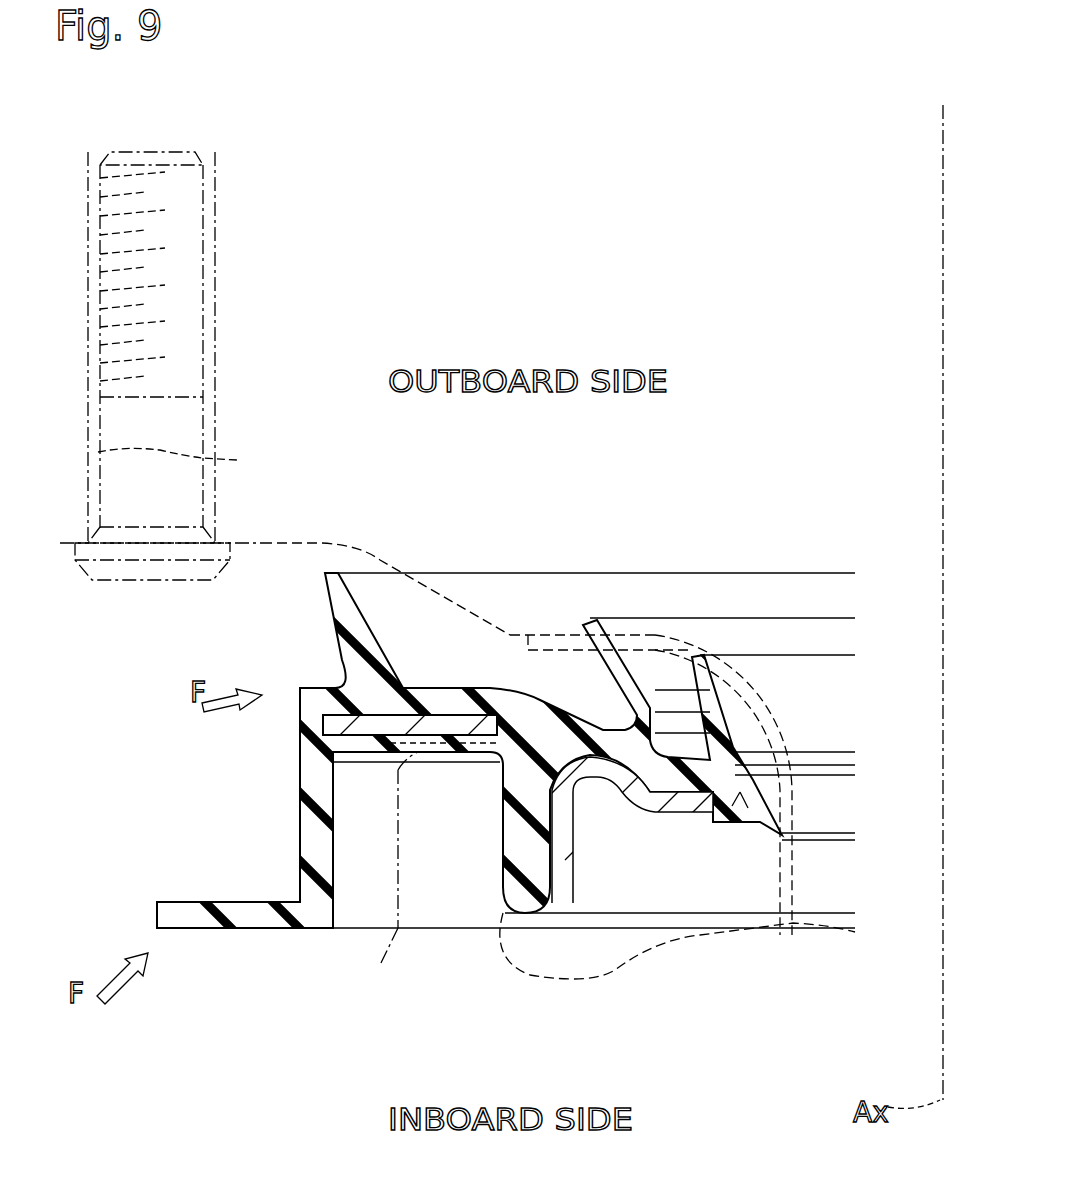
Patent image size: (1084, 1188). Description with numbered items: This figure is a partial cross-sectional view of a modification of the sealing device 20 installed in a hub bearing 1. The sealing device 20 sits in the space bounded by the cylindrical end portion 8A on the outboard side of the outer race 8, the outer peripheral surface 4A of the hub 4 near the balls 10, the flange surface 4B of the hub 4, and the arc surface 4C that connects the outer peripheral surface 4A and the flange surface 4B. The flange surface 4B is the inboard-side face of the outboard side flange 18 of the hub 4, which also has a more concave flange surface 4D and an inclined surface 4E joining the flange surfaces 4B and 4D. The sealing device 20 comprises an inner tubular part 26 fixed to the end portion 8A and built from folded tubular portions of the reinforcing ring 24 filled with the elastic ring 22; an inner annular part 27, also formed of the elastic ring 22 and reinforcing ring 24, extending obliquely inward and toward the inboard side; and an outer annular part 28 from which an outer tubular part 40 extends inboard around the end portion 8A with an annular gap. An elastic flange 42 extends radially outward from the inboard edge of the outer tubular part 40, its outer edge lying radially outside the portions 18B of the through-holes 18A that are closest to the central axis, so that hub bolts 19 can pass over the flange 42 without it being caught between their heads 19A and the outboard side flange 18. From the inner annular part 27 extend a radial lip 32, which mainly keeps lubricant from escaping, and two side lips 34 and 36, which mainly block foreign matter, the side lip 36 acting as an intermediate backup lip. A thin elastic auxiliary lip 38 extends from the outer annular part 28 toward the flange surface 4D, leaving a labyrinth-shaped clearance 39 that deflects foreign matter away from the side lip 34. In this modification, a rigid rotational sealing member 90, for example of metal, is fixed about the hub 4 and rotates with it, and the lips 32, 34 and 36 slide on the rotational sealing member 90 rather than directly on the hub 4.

The hub bearing 1 is at (276, 765).
The hub 4 is at (795, 932).
The outer peripheral surface 4A is at (790, 883).
The flange surface 4B is at (558, 633).
The arc surface 4C is at (765, 718).
The flange surface 4D is at (304, 543).
The inclined surface 4E is at (420, 618).
The outer race 8 is at (398, 856).
The cylindrical end portion 8A is at (398, 816).
The balls 10 is at (817, 930).
The outboard side flange 18 is at (262, 547).
The through-hole 18A is at (237, 460).
The portion closest to the central axis 18B is at (203, 350).
The hub bolt 19 is at (210, 385).
The head 19A is at (118, 583).
The sealing device 20 is at (585, 558).
The elastic ring 22 is at (305, 740).
The reinforcing ring 24 is at (560, 875).
The inner tubular part 26 is at (527, 915).
The inner annular part 27 is at (588, 770).
The outer annular part 28 is at (445, 688).
The radial lip 32 is at (787, 832).
The side lip 34 is at (605, 640).
The side lip 36 is at (712, 665).
The auxiliary lip 38 is at (337, 610).
The clearance 39 is at (327, 567).
The outer tubular part 40 is at (305, 825).
The flange 42 is at (205, 905).
The rotational sealing member 90 is at (688, 645).